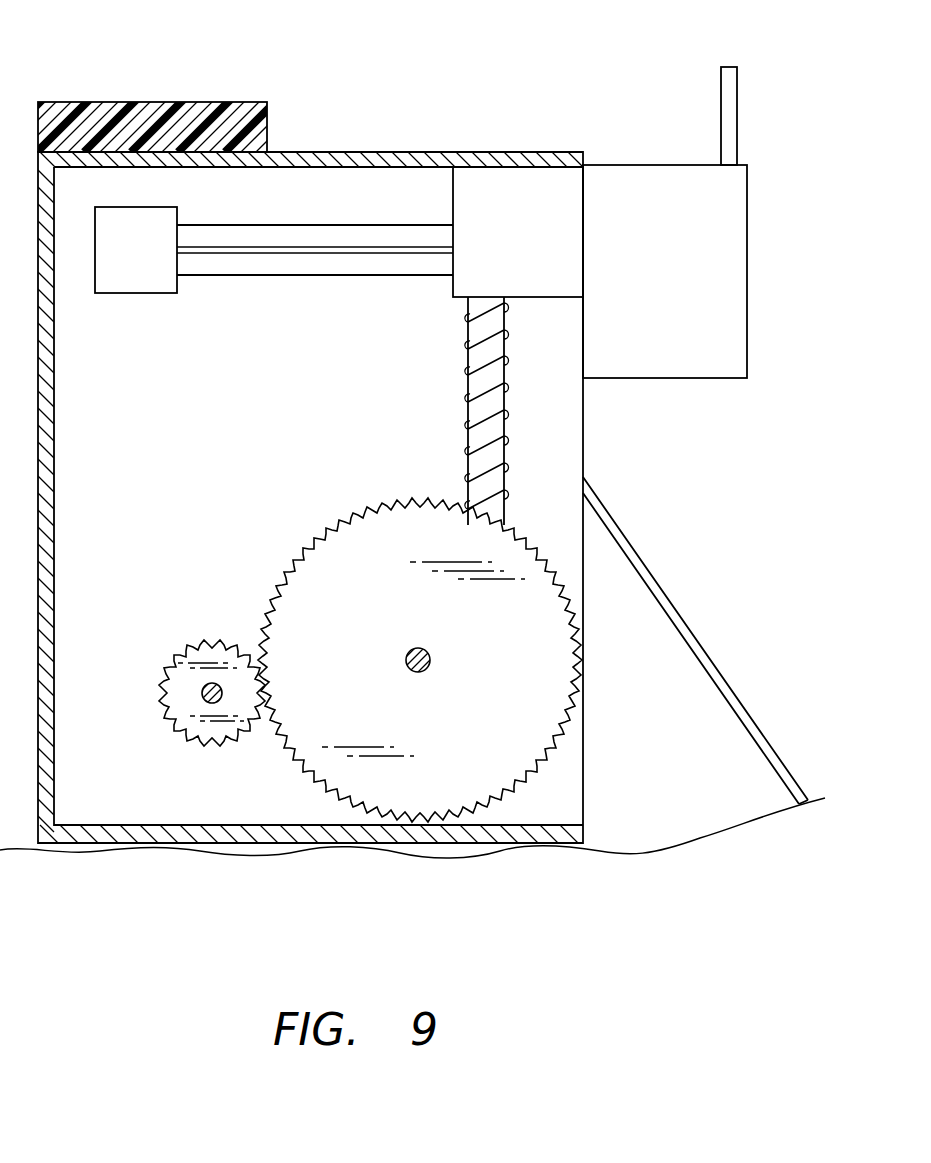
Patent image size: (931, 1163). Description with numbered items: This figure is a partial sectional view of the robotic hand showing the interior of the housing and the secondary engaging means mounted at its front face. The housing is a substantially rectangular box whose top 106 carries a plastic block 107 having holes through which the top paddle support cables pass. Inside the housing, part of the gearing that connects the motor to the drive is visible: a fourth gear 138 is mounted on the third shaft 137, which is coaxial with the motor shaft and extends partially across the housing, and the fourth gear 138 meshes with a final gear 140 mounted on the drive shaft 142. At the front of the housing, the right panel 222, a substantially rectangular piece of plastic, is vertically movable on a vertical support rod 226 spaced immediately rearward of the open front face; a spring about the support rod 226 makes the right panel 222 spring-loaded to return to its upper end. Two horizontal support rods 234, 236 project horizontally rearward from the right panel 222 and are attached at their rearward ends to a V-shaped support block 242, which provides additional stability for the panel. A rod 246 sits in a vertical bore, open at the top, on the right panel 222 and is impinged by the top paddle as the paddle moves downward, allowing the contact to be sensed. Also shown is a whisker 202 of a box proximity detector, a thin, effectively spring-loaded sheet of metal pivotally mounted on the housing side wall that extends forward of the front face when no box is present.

The top 106 is at (528, 150).
The plastic block 107 is at (118, 101).
The V-shaped support block 242 is at (137, 207).
The horizontal support rod 234 is at (293, 225).
The horizontal support rod 236 is at (355, 250).
The vertical support rod 226 is at (502, 450).
The right panel 222 is at (647, 165).
The rod 246 is at (737, 108).
The whisker 202 is at (637, 555).
The final gear 140 is at (420, 783).
The drive shaft 142 is at (430, 668).
The fourth gear 138 is at (222, 733).
The third shaft 137 is at (203, 698).